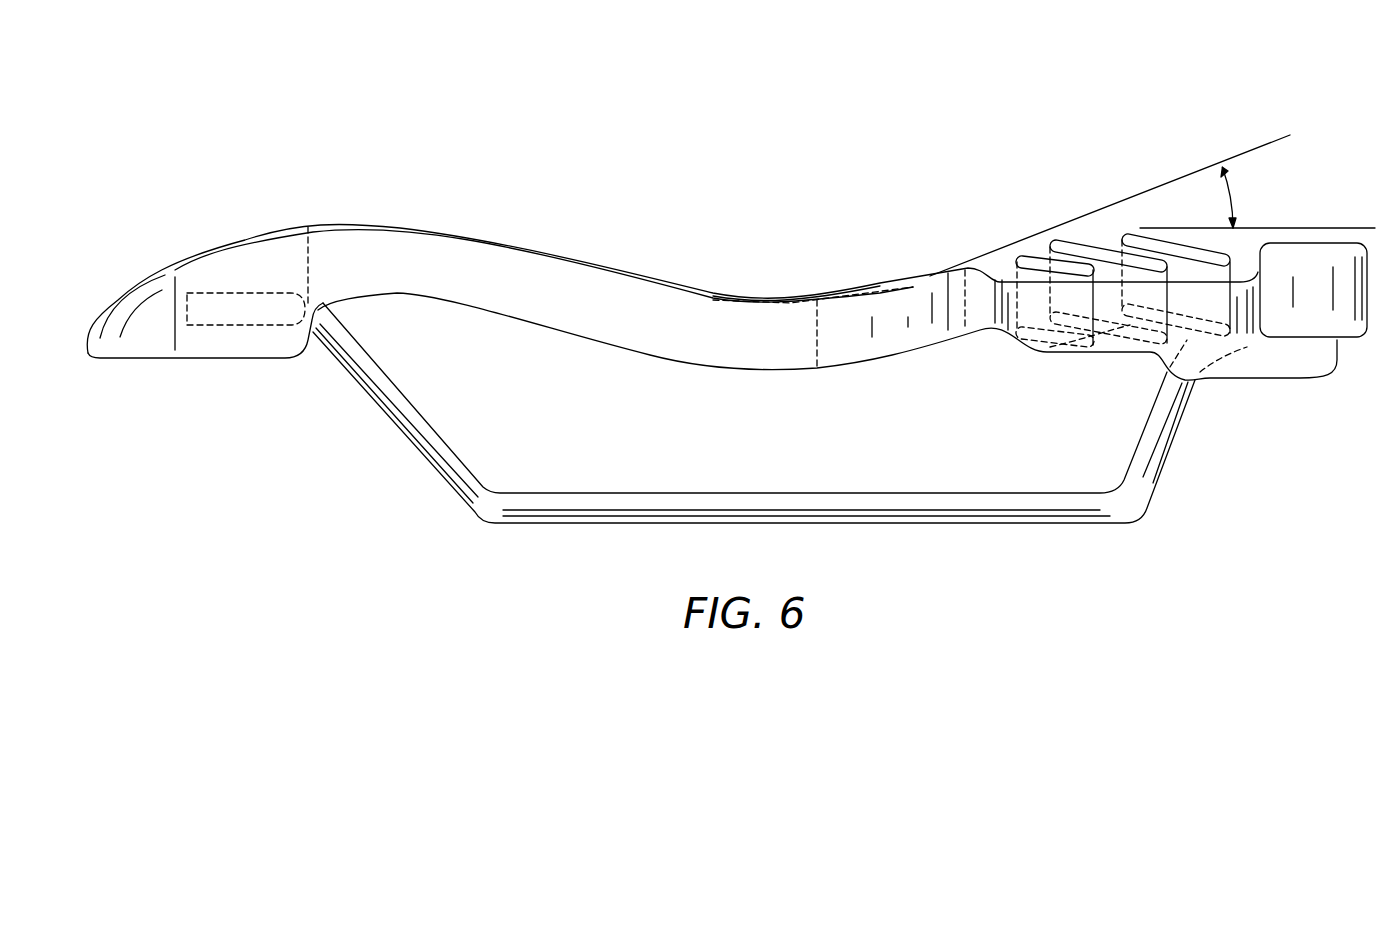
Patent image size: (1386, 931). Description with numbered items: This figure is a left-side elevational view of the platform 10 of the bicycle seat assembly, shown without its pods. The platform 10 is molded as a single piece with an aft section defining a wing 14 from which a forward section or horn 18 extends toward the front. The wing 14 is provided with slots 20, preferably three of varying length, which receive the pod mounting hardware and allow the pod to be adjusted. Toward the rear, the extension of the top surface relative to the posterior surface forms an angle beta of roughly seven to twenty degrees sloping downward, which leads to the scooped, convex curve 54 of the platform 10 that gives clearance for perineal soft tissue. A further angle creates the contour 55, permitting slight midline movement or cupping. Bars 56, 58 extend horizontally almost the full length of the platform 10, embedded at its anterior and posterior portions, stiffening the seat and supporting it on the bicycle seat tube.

The platform 10 is at (884, 133).
The wing 14 is at (1240, 267).
The horn 18 is at (380, 223).
The slots 20 is at (1137, 240).
The scooped curve 54 is at (645, 363).
The contour 55 is at (847, 297).
The bar 56 is at (427, 467).
The bar 58 is at (711, 398).